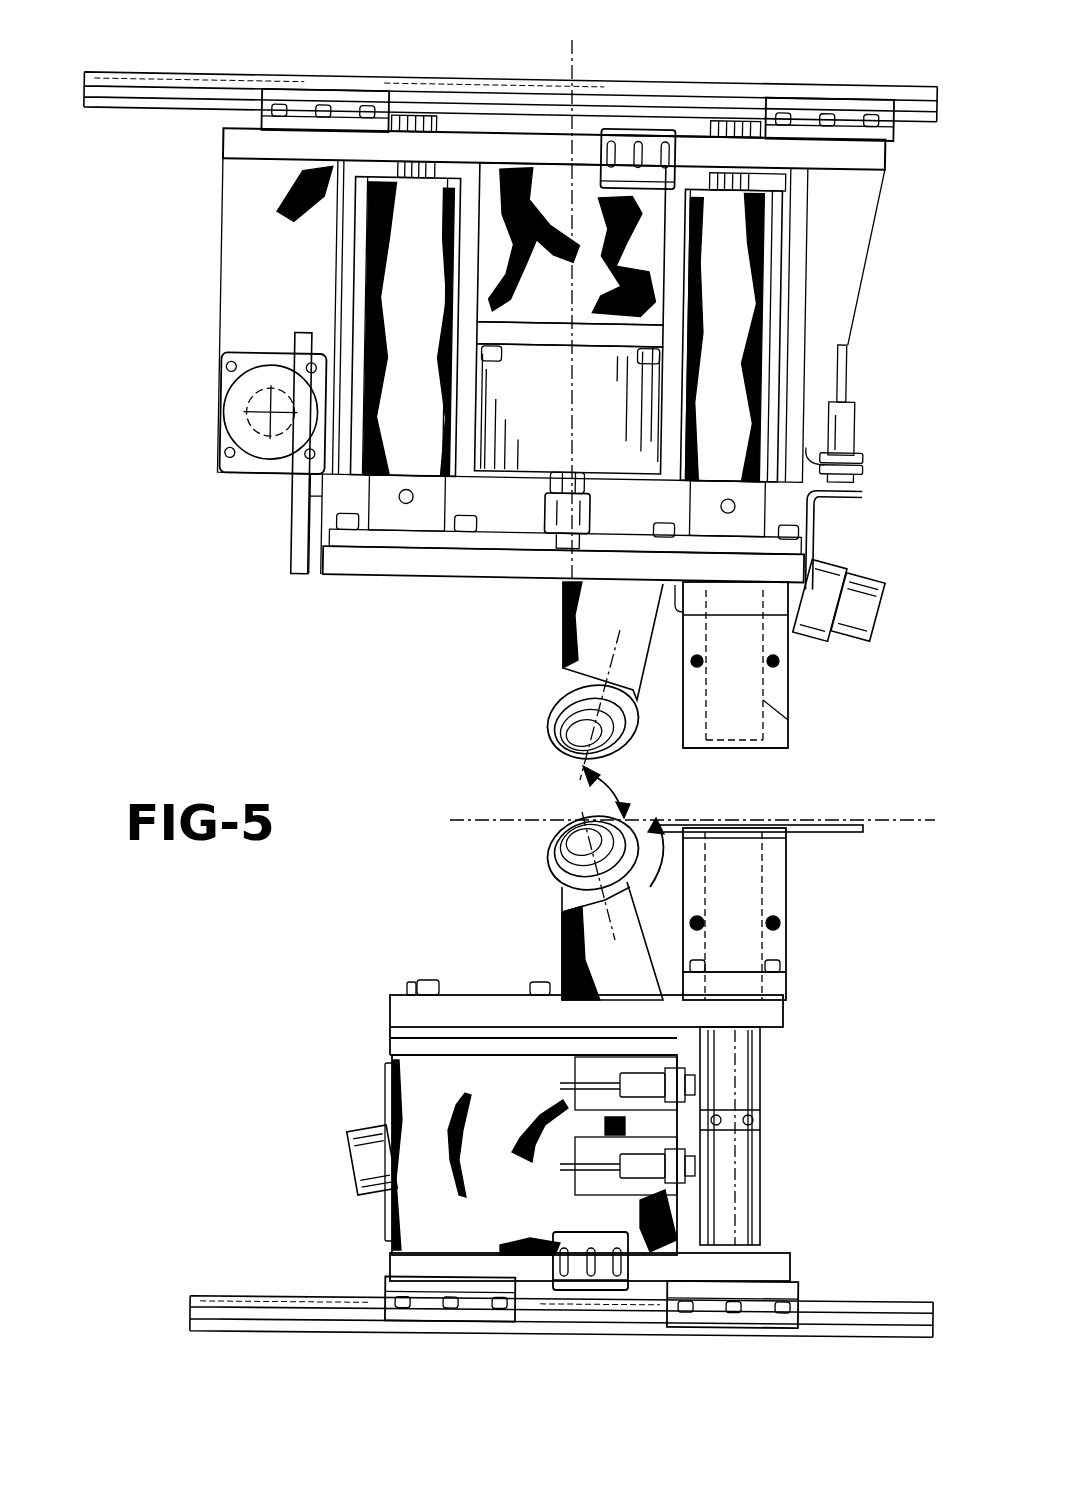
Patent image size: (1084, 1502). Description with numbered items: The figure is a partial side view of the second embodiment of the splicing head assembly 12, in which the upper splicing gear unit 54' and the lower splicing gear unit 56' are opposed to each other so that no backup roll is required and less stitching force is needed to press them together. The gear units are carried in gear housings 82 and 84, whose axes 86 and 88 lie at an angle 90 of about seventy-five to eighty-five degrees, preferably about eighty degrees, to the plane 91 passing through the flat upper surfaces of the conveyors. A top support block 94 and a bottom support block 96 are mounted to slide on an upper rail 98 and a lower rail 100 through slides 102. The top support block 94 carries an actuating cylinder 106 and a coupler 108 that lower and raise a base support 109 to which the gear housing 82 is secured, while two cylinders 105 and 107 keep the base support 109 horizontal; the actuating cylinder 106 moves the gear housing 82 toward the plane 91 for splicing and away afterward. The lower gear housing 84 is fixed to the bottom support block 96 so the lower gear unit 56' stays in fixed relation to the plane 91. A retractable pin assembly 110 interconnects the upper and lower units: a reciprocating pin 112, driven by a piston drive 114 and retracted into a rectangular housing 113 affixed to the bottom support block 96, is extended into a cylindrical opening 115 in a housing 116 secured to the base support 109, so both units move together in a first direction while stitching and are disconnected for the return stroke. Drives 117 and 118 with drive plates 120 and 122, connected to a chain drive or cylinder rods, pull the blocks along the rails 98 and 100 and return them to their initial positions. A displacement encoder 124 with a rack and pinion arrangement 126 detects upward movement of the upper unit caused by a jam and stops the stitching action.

The splicing head assembly 12 is at (813, 720).
The upper splicing gear unit 54' is at (545, 726).
The lower splicing gear unit 56' is at (559, 865).
The gear housing 82 is at (562, 670).
The gear housing 84 is at (612, 906).
The axis 86 is at (618, 638).
The axis 88 is at (565, 943).
The angle 90 is at (617, 784).
The plane 91 is at (483, 822).
The top support block 94 is at (869, 319).
The bottom support block 96 is at (348, 1115).
The upper rail 98 is at (143, 107).
The lower rail 100 is at (293, 1297).
The slides 102 is at (348, 97).
The cylinder 105 is at (405, 319).
The actuating cylinder 106 is at (570, 318).
The cylinder 107 is at (735, 324).
The coupler 108 is at (596, 524).
The base support 109 is at (385, 572).
The retractable pin assembly 110 is at (816, 922).
The reciprocating pin 112 is at (730, 936).
The rectangular housing 113 is at (778, 863).
The piston drive 114 is at (746, 1086).
The cylindrical opening 115 is at (768, 716).
The housing 116 is at (775, 684).
The drive 117 is at (650, 118).
The drive 118 is at (600, 1287).
The drive plate 120 is at (623, 140).
The drive plate 122 is at (576, 1284).
The displacement encoder 124 is at (216, 406).
The rack and pinion arrangement 126 is at (293, 522).